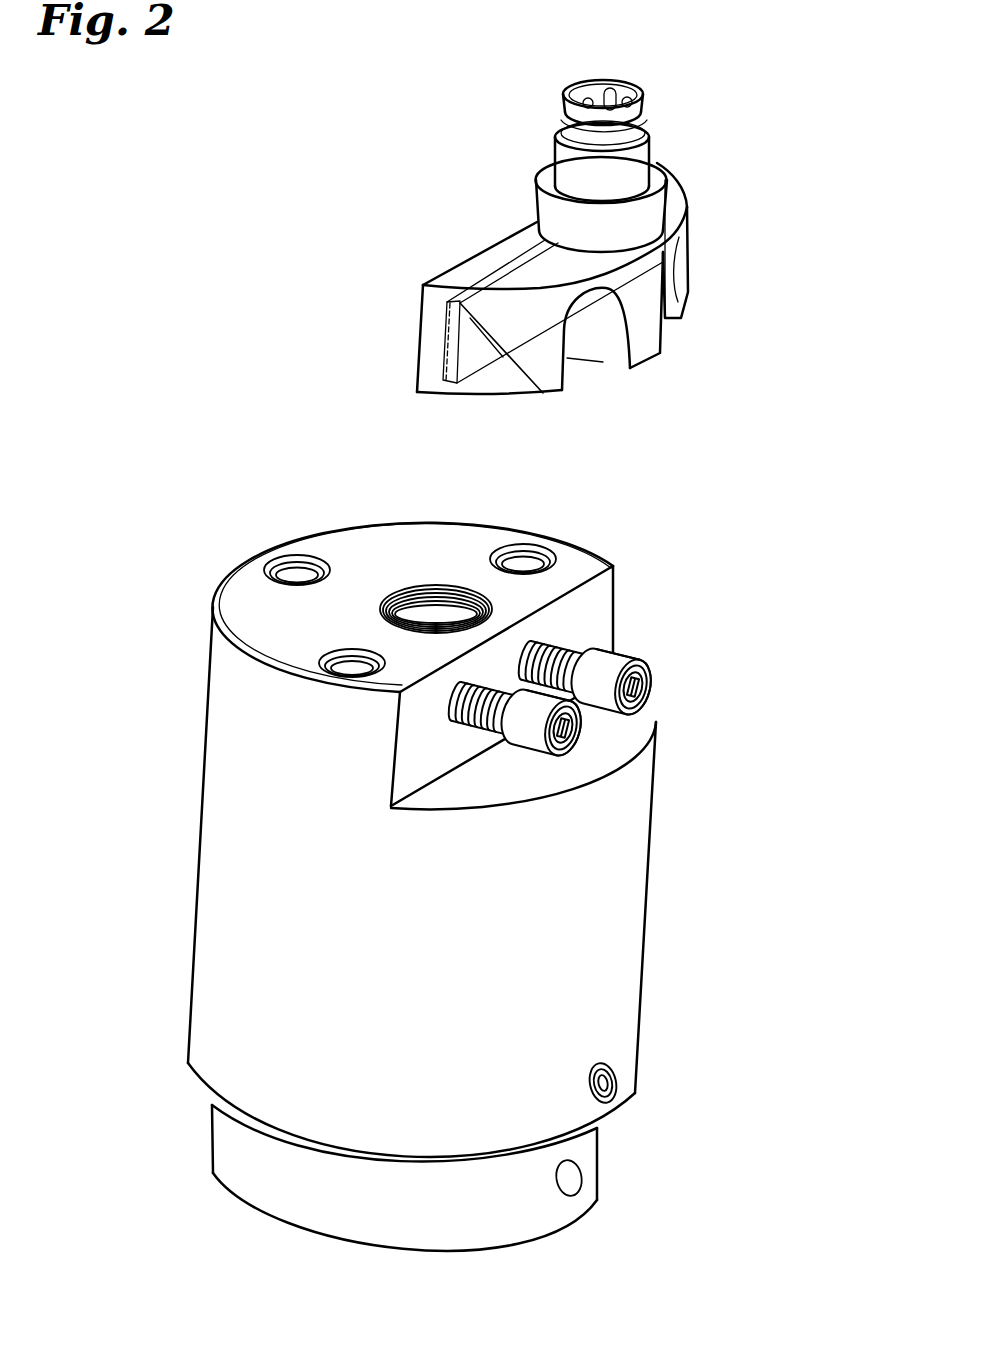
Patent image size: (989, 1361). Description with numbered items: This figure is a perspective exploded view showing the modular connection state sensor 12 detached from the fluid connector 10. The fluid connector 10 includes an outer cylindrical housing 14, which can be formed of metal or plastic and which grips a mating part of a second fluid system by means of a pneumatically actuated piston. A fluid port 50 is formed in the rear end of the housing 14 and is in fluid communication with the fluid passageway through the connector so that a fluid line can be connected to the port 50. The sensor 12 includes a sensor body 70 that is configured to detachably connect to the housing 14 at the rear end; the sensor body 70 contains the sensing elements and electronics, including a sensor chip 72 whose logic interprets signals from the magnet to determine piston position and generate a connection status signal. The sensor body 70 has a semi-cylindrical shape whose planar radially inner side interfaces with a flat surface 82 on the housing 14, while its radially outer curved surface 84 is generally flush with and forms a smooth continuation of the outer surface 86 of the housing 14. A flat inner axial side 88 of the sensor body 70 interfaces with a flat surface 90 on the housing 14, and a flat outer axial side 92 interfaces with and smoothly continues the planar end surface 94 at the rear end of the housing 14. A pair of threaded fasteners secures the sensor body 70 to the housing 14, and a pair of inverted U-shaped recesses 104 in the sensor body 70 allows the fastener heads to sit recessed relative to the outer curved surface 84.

The fluid connector 10 is at (690, 975).
The modular connection state sensor 12 is at (715, 263).
The outer cylindrical housing 14 is at (251, 976).
The fluid port 50 is at (437, 603).
The sensor body 70 is at (688, 187).
The sensor chip 72 is at (447, 343).
The flat or planar surface on the housing 82 is at (592, 618).
The radially outer curved surface 84 is at (545, 365).
The outer surface of the housing 86 is at (272, 744).
The inner axial side 88 is at (468, 397).
The flat or planar surface on the housing 90 is at (607, 763).
The outer axial side 92 is at (508, 245).
The end surface 94 is at (357, 560).
The inverted U-shaped recesses 104 is at (605, 372).